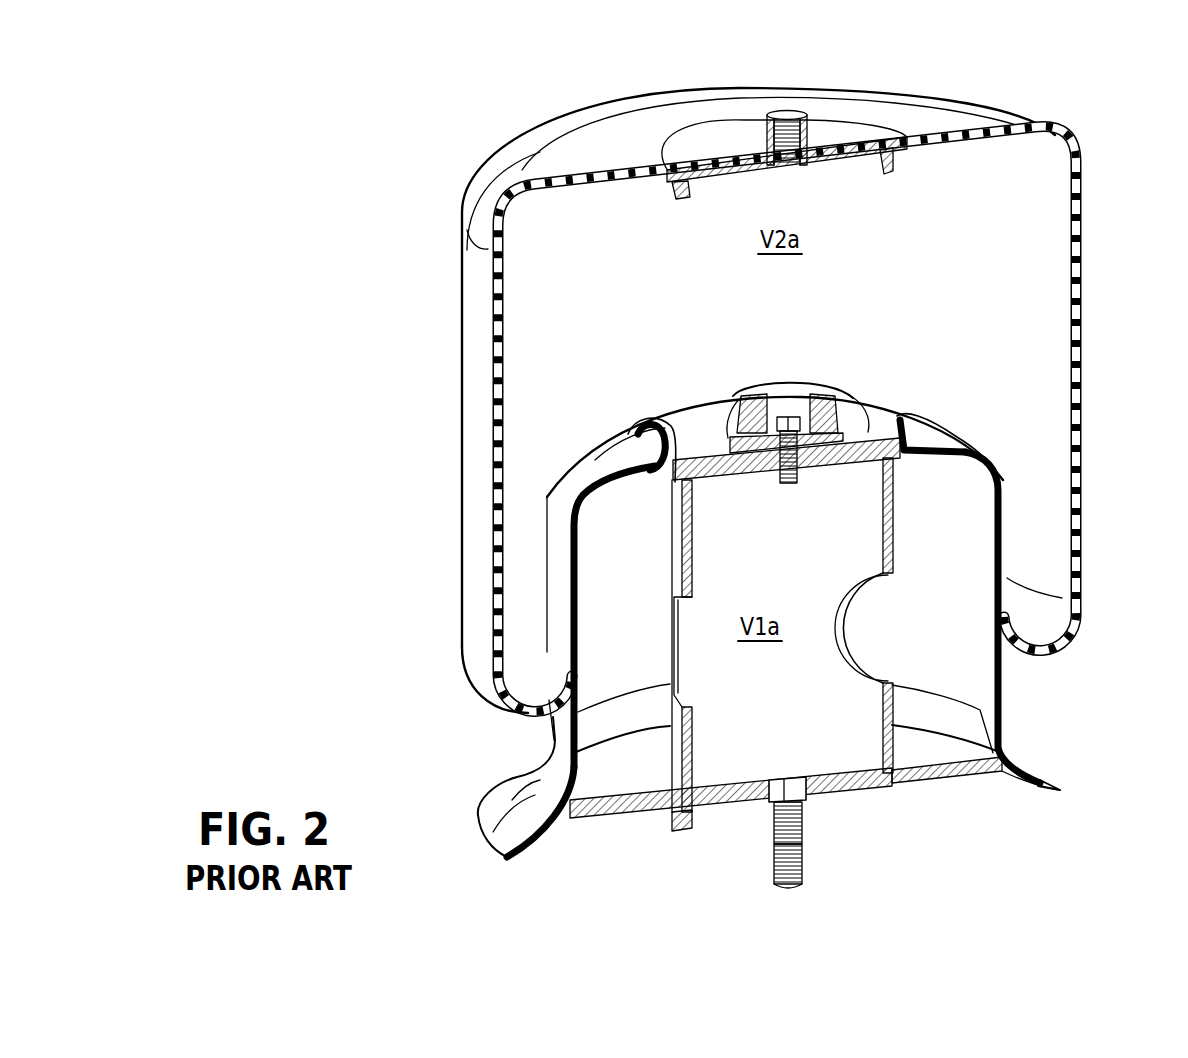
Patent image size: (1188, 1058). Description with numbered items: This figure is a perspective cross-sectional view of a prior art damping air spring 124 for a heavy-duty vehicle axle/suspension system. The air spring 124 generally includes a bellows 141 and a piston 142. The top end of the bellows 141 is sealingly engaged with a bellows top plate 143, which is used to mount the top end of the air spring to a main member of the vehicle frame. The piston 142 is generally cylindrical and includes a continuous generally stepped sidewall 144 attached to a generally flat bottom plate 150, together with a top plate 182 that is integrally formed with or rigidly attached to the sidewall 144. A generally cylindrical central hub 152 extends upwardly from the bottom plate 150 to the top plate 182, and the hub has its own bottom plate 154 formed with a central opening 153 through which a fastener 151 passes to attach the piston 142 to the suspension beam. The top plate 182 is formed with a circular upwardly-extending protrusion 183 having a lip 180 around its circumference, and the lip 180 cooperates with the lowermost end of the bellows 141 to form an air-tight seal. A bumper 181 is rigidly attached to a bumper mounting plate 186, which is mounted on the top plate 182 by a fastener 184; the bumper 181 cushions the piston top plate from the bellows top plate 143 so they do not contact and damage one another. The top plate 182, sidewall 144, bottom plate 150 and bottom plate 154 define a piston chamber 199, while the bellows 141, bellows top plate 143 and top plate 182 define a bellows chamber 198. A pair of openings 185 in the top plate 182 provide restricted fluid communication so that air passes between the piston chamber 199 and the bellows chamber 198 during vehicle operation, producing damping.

The prior art damping air spring 124 is at (484, 101).
The bellows 141 is at (1082, 198).
The piston 142 is at (977, 777).
The bellows top plate 143 is at (753, 140).
The sidewall 144 is at (1000, 745).
The bottom plate 150 is at (925, 787).
The fastener 151 is at (790, 884).
The central hub 152 is at (683, 747).
The central opening 153 is at (780, 848).
The bottom plate 154 is at (723, 830).
The lip 180 is at (650, 467).
The bumper 181 is at (805, 390).
The top plate 182 is at (700, 440).
The protrusion 183 is at (660, 433).
The fastener 184 is at (793, 483).
The openings 185 is at (730, 437).
The bumper mounting plate 186 is at (810, 440).
The bellows chamber 198 is at (500, 612).
The piston chamber 199 is at (577, 782).